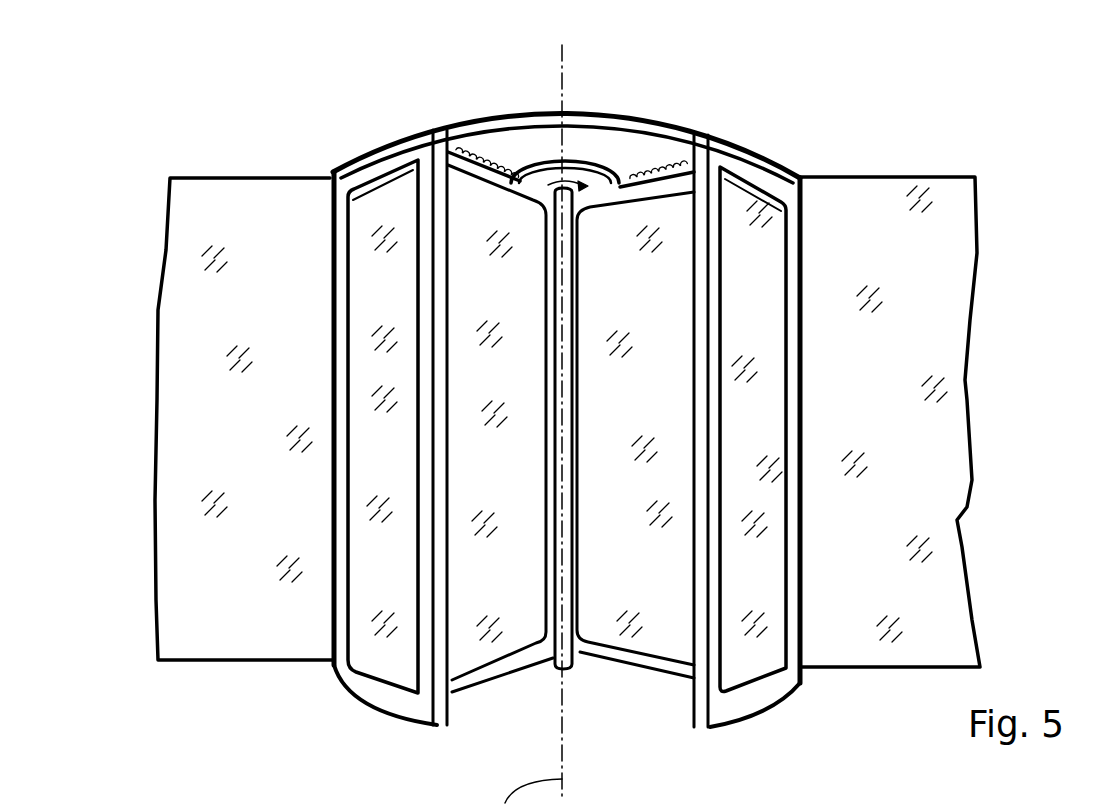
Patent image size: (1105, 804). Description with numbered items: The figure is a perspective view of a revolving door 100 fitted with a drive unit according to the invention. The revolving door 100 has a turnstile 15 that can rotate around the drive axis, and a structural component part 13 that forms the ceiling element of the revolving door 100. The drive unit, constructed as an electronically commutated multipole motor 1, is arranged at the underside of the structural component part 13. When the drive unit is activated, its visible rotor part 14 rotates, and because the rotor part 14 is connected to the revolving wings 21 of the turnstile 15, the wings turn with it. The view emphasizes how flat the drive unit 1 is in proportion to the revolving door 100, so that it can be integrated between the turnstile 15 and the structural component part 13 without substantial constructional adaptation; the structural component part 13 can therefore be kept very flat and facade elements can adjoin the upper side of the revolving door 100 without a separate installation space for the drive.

The revolving door 100 is at (855, 108).
The electronically commutated multipole motor 1 is at (612, 163).
The structural component part 13 is at (656, 152).
The rotor part 14 is at (540, 182).
The revolving wings 21 is at (478, 686).
The turnstile 15 is at (634, 680).